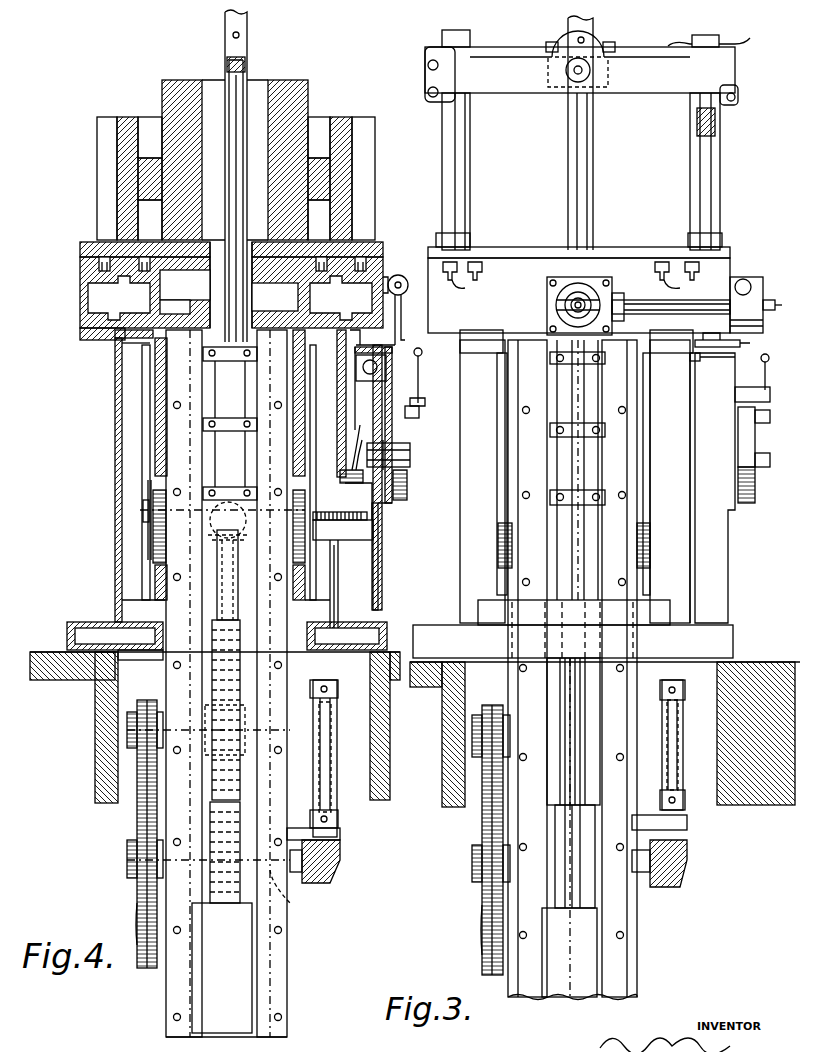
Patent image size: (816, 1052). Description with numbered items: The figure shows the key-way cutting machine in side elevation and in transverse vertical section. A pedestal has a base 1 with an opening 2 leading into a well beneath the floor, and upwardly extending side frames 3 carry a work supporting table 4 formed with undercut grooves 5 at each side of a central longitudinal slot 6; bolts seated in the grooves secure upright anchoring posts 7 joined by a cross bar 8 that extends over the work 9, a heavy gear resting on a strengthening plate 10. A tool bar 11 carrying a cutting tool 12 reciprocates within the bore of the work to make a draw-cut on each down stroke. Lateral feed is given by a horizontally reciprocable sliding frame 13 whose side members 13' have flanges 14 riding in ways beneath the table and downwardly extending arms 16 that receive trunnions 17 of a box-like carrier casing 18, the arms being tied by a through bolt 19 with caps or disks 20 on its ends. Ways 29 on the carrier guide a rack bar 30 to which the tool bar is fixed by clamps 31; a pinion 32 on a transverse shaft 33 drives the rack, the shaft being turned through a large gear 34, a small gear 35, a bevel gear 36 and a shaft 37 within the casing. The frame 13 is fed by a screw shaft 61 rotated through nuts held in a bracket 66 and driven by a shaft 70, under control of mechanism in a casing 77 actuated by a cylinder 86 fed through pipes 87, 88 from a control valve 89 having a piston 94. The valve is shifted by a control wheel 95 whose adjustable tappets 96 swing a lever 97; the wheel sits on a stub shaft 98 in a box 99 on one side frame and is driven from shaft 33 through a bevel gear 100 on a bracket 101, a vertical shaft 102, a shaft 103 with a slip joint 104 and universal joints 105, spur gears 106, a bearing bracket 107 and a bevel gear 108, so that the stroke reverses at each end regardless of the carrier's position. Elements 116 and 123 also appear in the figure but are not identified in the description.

In FIG. 4, the base 1 is at (67, 628).
In FIG. 3, the base 1 is at (428, 626).
In FIG. 4, the opening 2 is at (160, 658).
In FIG. 4, the side frames 3 is at (115, 466).
In FIG. 3, the side frames 3 is at (462, 516).
In FIG. 4, the work supporting table 4 is at (80, 270).
In FIG. 3, the work supporting table 4 is at (528, 262).
In FIG. 4, the undercut grooves 5 is at (360, 256).
In FIG. 3, the undercut grooves 5 is at (580, 262).
In FIG. 4, the central longitudinal slot 6 is at (208, 286).
In FIG. 3, the anchoring standards or posts 7 is at (442, 170).
In FIG. 3, the cross bar 8 is at (638, 93).
In FIG. 4, the work 9 is at (303, 100).
In FIG. 4, the plate 10 is at (384, 247).
In FIG. 3, the plate 10 is at (506, 250).
In FIG. 4, the tool bar 11 is at (226, 56).
In FIG. 3, the tool bar 11 is at (594, 168).
In FIG. 4, the cutting tool 12 is at (249, 62).
In FIG. 4, the carrying slide or frame 13 is at (229, 300).
In FIG. 4, the side longitudinal members 13' is at (113, 352).
In FIG. 4, the side rib or flange 14 is at (128, 300).
In FIG. 4, the downwardly extending arm 16 is at (143, 400).
In FIG. 3, the downwardly extending arm 16 is at (500, 420).
In FIG. 4, the bearing or trunnion 17 is at (148, 494).
In FIG. 4, the carrier casing 18 is at (165, 582).
In FIG. 3, the carrier casing 18 is at (528, 460).
In FIG. 4, the through bolt 19 is at (143, 516).
In FIG. 4, the caps or disks 20 is at (152, 540).
In FIG. 3, the caps or disks 20 is at (498, 545).
In FIG. 4, the ways 29 is at (252, 992).
In FIG. 3, the ways 29 is at (562, 952).
In FIG. 4, the rack bar 30 is at (248, 666).
In FIG. 3, the rack bar 30 is at (592, 716).
In FIG. 4, the clamps 31 is at (228, 362).
In FIG. 3, the clamps 31 is at (603, 362).
In FIG. 4, the pinion 32 is at (225, 903).
In FIG. 4, the transverse shaft 33 is at (292, 902).
In FIG. 4, the large gear 34 is at (137, 903).
In FIG. 3, the large gear 34 is at (482, 940).
In FIG. 4, the small gear 35 is at (147, 700).
In FIG. 3, the small gear 35 is at (492, 705).
In FIG. 4, the bevel gear 36 is at (250, 548).
In FIG. 4, the shaft 37 is at (238, 636).
In FIG. 3, the screw shaft 61 is at (565, 302).
In FIG. 3, the bracket 66 is at (596, 278).
In FIG. 3, the shaft 70 is at (640, 302).
In FIG. 3, the box or casing 77 is at (758, 280).
In FIG. 4, the cylinder 86 is at (398, 275).
In FIG. 3, the fluid pipe 87 is at (734, 345).
In FIG. 3, the fluid pipe 88 is at (724, 358).
In FIG. 4, the slide control valve 89 is at (370, 348).
In FIG. 4, the piston 94 is at (363, 367).
In FIG. 4, the control wheel 95 is at (408, 490).
In FIG. 3, the control wheel 95 is at (757, 488).
In FIG. 4, the tappets 96 is at (419, 410).
In FIG. 3, the tappets 96 is at (770, 415).
In FIG. 4, the control lever 97 is at (420, 380).
In FIG. 3, the control lever 97 is at (768, 378).
In FIG. 4, the stub shaft 98 is at (411, 455).
In FIG. 4, the box or case 99 is at (386, 368).
In FIG. 3, the box or case 99 is at (718, 524).
In FIG. 4, the bevel gear 100 is at (312, 880).
In FIG. 3, the bevel gear 100 is at (662, 876).
In FIG. 4, the bracket 101 is at (340, 826).
In FIG. 3, the bracket 101 is at (687, 826).
In FIG. 4, the vertical shaft 102 is at (340, 576).
In FIG. 4, the shaft 103 is at (334, 772).
In FIG. 3, the shaft 103 is at (680, 780).
In FIG. 4, the slip joint 104 is at (337, 758).
In FIG. 3, the slip joint 104 is at (683, 738).
In FIG. 4, the universal joints 105 is at (332, 690).
In FIG. 3, the universal joints 105 is at (685, 688).
In FIG. 4, the spur gears 106 is at (373, 532).
In FIG. 4, the bearing bracket 107 is at (368, 515).
In FIG. 4, the bevel gear 108 is at (350, 440).
In FIG. 3, the shaft end 116 is at (769, 300).
In FIG. 3, the knob 123 is at (743, 279).